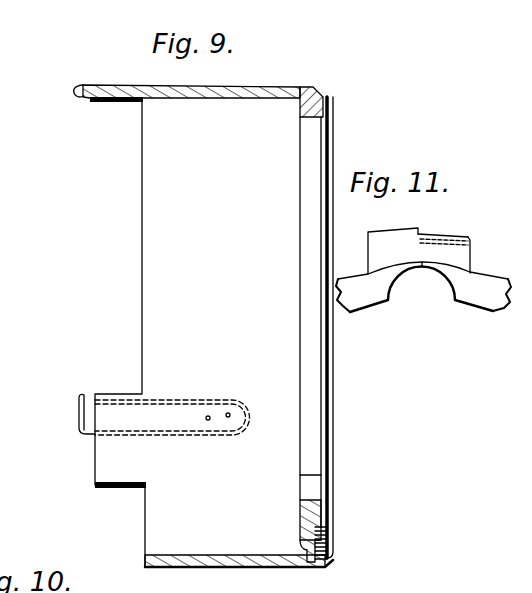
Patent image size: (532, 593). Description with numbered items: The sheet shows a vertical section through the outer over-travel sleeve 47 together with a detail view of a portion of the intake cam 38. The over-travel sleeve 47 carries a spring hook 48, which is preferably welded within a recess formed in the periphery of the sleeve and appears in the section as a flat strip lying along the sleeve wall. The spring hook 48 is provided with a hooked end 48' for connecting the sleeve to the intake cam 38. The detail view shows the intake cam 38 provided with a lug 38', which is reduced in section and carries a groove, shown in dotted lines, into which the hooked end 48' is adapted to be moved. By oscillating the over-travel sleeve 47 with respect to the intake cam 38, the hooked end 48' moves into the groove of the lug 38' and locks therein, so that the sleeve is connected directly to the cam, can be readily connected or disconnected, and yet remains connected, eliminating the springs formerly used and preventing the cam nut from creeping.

In FIG. 9, the outer over-travel sleeve 47 is at (224, 557).
In FIG. 9, the spring hook 48 is at (191, 76).
In FIG. 9, the hooked end 48' is at (132, 245).
In FIG. 11, the intake cam 38 is at (423, 305).
In FIG. 11, the lug 38' is at (446, 232).